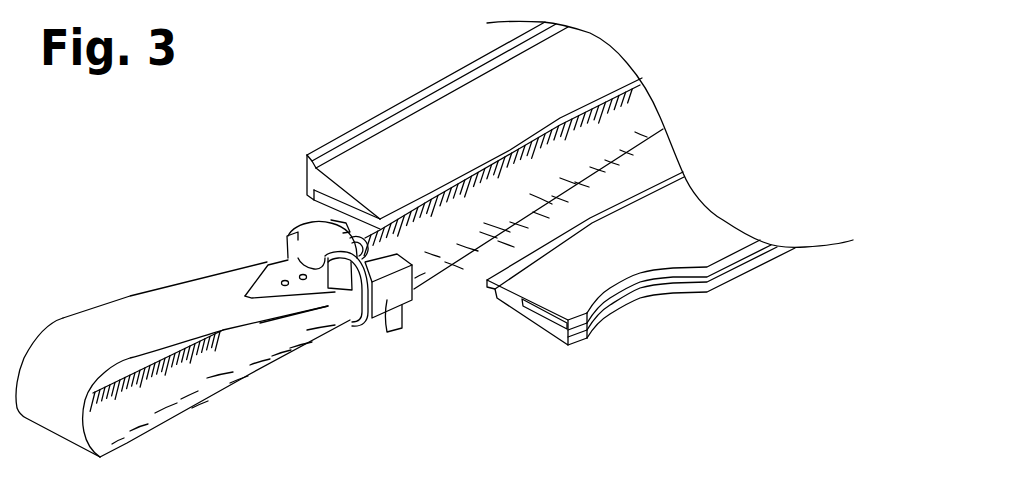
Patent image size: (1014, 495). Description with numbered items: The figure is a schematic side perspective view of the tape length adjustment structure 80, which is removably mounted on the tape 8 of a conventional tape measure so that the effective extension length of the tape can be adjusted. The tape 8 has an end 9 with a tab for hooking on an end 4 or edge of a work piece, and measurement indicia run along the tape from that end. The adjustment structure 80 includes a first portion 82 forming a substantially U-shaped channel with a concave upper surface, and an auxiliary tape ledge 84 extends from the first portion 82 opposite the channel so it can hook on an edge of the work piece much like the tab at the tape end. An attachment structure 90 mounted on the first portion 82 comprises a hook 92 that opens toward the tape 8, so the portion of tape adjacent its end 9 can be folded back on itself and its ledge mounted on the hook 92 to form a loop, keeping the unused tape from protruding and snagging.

The end 4 is at (510, 297).
The tape 8 is at (240, 353).
The end 9 is at (328, 308).
The tape length adjustment structure 80 is at (262, 244).
The first portion 82 is at (383, 298).
The auxiliary tape ledge 84 is at (405, 317).
The attachment structure 90 is at (257, 227).
The hook 92 is at (315, 243).